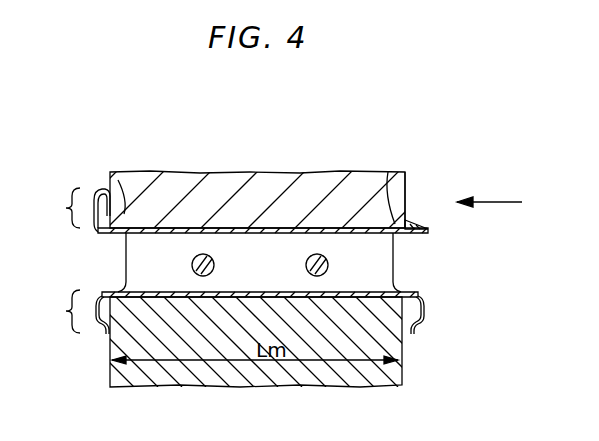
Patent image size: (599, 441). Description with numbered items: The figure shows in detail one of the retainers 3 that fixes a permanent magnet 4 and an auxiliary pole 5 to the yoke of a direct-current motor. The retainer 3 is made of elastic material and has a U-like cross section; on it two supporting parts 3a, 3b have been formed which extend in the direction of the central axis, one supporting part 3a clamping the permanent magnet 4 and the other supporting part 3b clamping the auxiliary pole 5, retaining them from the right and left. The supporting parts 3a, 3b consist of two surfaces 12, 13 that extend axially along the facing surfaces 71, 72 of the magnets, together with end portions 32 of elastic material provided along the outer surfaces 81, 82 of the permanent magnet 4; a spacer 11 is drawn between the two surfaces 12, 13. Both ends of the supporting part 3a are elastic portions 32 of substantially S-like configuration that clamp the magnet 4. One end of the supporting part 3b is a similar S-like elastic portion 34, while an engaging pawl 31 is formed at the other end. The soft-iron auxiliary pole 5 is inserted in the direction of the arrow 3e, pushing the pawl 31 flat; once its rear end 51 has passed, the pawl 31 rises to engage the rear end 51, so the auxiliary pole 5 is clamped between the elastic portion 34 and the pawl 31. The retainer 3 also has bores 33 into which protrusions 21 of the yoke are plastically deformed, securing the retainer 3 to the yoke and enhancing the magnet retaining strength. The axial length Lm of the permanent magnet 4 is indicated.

The retainer 3 is at (278, 255).
The supporting part 3a is at (57, 311).
The supporting part 3b is at (57, 208).
The arrow 3e is at (494, 202).
The permanent magnet 4 is at (356, 385).
The auxiliary pole 5 is at (343, 185).
The spacer 11 is at (378, 254).
The surface 12 is at (150, 292).
The surface 13 is at (148, 233).
The protrusion 21 is at (213, 256).
The engaging pawl 31 is at (414, 222).
The elastic portion 32 is at (103, 333).
The bore 33 is at (213, 270).
The elastic portion 34 is at (104, 190).
The rear end 51 is at (408, 196).
The facing surface 71 is at (180, 227).
The facing surface 72 is at (198, 300).
The outer surface 81 is at (118, 180).
The outer surface 82 is at (113, 308).